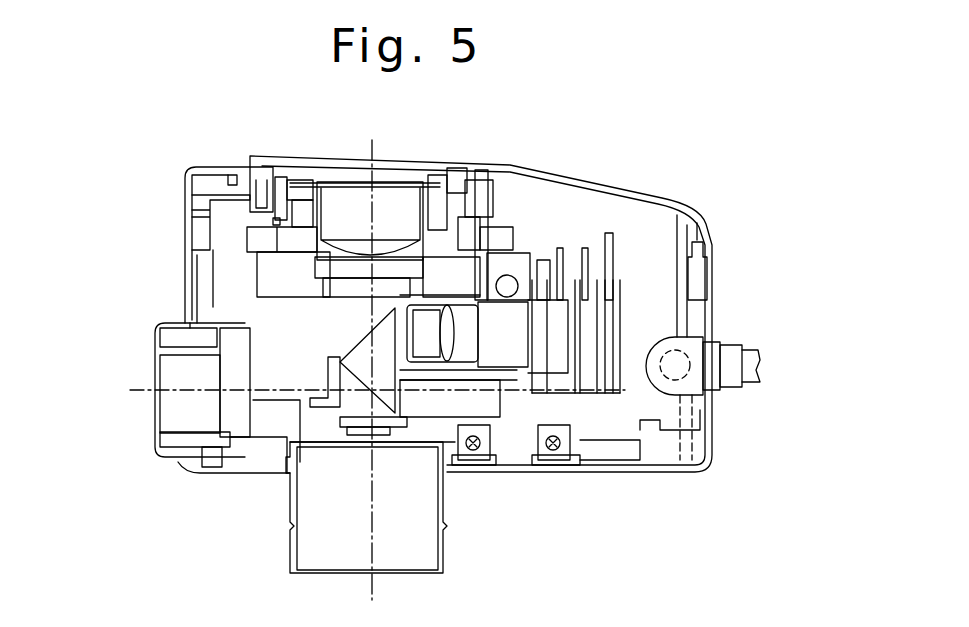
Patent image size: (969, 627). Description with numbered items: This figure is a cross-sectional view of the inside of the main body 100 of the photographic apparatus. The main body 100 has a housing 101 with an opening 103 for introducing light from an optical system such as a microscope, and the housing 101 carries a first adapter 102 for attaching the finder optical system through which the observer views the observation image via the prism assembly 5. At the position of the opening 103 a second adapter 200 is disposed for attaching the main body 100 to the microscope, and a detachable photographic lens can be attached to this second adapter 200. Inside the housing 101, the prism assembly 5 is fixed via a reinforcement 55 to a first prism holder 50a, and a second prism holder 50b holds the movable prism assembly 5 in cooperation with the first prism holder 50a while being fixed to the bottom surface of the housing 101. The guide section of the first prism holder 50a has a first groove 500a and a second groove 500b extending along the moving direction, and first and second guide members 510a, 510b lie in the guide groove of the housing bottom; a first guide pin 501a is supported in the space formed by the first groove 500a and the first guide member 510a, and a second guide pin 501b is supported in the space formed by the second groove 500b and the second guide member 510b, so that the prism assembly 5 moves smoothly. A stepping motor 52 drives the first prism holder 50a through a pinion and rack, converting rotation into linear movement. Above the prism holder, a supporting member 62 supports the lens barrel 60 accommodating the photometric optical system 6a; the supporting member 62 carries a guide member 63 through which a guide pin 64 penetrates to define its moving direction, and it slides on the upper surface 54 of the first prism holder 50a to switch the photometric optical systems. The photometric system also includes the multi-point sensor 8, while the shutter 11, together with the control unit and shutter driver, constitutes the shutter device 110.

The prism assembly 5 is at (380, 338).
The photometric optical system 6a is at (448, 297).
The multi-point sensor 8 is at (570, 335).
The shutter 11 is at (338, 266).
The first prism holder 50a is at (708, 432).
The second prism holder 50b is at (322, 413).
The stepping motor 52 is at (567, 275).
The upper surface 54 is at (433, 380).
The reinforcement 55 is at (410, 420).
The lens barrel 60 is at (333, 267).
The supporting member 62 is at (558, 278).
The guide member 63 is at (504, 275).
The guide pin 64 is at (527, 300).
The main body 100 is at (703, 172).
The housing 101 is at (697, 223).
The first adapter 102 is at (160, 385).
The opening 103 is at (367, 428).
The shutter device 110 is at (280, 268).
The second adapter 200 is at (290, 518).
The first groove 500a is at (483, 450).
The second groove 500b is at (612, 448).
The first guide pin 501a is at (477, 452).
The second guide pin 501b is at (627, 455).
The first guide member 510a is at (470, 452).
The second guide member 510b is at (650, 463).